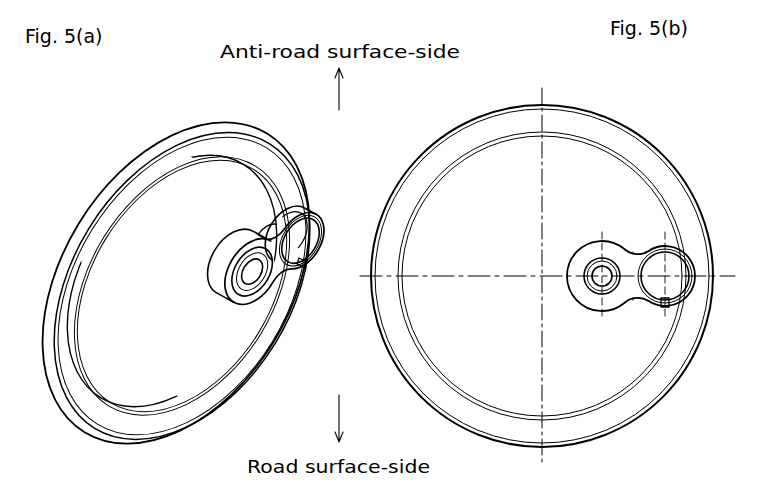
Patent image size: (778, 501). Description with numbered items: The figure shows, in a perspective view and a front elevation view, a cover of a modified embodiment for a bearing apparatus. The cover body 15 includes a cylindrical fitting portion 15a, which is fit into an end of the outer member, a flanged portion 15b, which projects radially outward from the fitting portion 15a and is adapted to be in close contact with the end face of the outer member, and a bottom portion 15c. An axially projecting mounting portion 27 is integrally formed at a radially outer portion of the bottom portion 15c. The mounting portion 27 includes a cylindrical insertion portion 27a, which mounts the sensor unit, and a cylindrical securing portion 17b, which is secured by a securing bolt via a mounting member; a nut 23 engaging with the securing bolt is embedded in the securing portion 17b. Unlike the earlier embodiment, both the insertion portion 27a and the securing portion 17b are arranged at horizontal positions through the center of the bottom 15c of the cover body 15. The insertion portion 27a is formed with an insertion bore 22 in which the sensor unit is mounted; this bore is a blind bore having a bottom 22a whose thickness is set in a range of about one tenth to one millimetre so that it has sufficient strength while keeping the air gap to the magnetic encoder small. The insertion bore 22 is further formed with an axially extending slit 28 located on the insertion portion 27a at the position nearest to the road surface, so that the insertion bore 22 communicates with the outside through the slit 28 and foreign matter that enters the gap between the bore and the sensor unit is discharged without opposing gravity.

In FIG. 5A, the cover body 15 is at (182, 115).
In FIG. 5B, the cover body 15 is at (636, 121).
In FIG. 5A, the cylindrical fitting portion 15a is at (152, 151).
In FIG. 5A, the flanged portion 15b is at (232, 124).
In FIG. 5B, the flanged portion 15b is at (445, 150).
In FIG. 5A, the bottom portion 15c is at (177, 387).
In FIG. 5B, the bottom portion 15c is at (503, 388).
In FIG. 5A, the cylindrical securing portion 17b is at (212, 269).
In FIG. 5B, the cylindrical securing portion 17b is at (570, 265).
In FIG. 5A, the insertion bore 22 is at (293, 234).
In FIG. 5B, the insertion bore 22 is at (677, 282).
In FIG. 5B, the bottom 22a is at (658, 268).
In FIG. 5A, the nut 23 is at (260, 283).
In FIG. 5B, the nut 23 is at (594, 298).
In FIG. 5A, the mounting portion 27 is at (316, 208).
In FIG. 5B, the mounting portion 27 is at (694, 242).
In FIG. 5A, the cylindrical insertion portion 27a is at (272, 222).
In FIG. 5B, the cylindrical insertion portion 27a is at (647, 307).
In FIG. 5A, the slit 28 is at (295, 252).
In FIG. 5B, the slit 28 is at (668, 308).